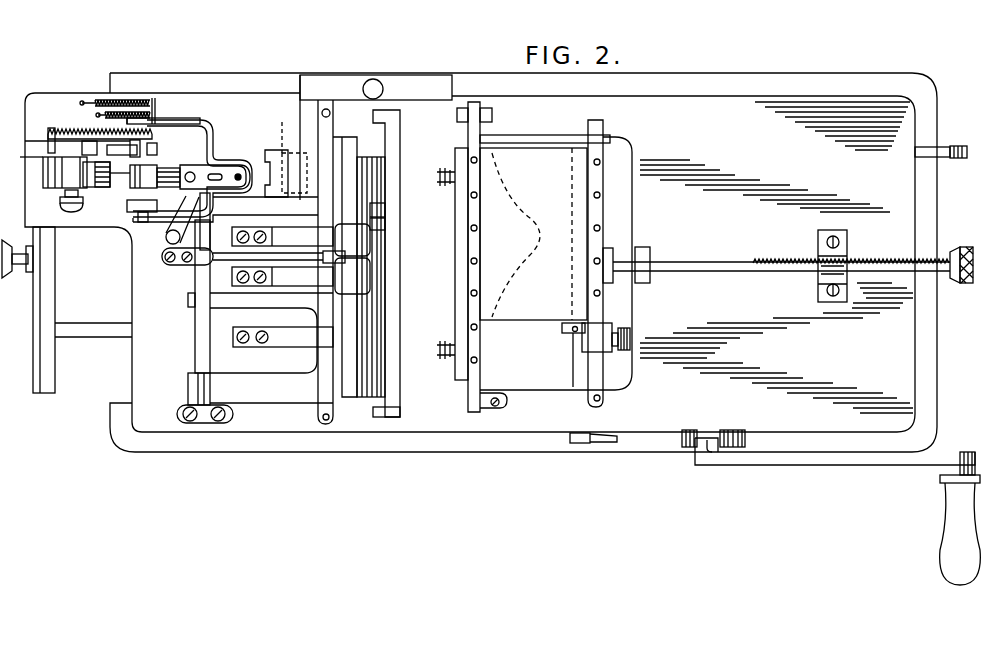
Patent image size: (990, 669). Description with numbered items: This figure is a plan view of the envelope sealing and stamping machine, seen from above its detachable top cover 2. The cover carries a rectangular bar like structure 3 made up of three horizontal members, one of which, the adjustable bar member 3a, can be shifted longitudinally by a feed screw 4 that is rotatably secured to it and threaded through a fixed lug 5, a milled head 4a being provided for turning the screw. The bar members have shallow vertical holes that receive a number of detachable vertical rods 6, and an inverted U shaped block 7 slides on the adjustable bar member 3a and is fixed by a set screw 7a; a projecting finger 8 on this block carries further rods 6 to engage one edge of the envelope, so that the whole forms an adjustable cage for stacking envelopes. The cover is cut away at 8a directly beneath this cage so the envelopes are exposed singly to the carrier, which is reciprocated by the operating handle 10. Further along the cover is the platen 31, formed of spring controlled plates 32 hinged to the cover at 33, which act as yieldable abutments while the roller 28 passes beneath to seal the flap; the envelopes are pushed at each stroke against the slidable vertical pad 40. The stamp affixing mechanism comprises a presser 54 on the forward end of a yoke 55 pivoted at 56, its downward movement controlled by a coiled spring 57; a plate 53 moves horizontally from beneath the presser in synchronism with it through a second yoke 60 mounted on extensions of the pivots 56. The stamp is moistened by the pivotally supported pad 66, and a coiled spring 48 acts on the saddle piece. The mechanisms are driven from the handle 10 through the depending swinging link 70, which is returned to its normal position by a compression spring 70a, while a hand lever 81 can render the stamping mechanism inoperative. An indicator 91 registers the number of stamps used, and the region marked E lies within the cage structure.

The detachable top cover 2 is at (890, 365).
The rectangular bar like structure 3 is at (550, 140).
The adjustable horizontal bar member 3a is at (594, 243).
The feed screw 4 is at (704, 266).
The milled head 4a is at (965, 247).
The fixed lug 5 is at (845, 262).
The detachable vertical rods 6 is at (471, 261).
The inverted U shaped block 7 is at (592, 341).
The set screw 7a is at (614, 336).
The projecting finger 8 is at (560, 333).
The cut away portion of top cover 8a is at (521, 385).
The operating handle 10 is at (840, 464).
The roller 28 is at (367, 380).
The platen 31 is at (287, 360).
The spring controlled plates 32 is at (301, 259).
The hinge connection 33 is at (199, 285).
The vertical pad 40 is at (48, 294).
The coiled spring 48 is at (73, 130).
The plate 53 is at (231, 163).
The presser 54 is at (239, 172).
The yoke 55 is at (178, 127).
The pivots 56 is at (139, 224).
The coiled spring 57 is at (98, 98).
The yoke 60 is at (213, 130).
The pad 66 is at (286, 152).
The depending swinging link 70 is at (163, 118).
The compression spring 70a is at (128, 120).
The lever 81 is at (950, 147).
The indicator 91 is at (107, 190).
The cam space E is at (518, 322).